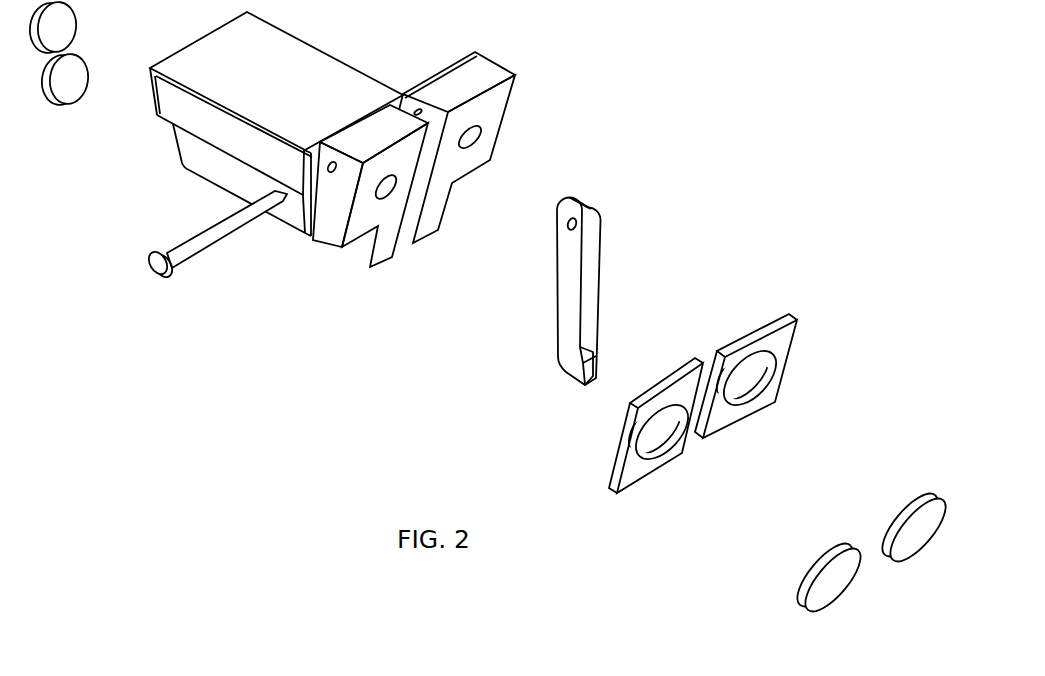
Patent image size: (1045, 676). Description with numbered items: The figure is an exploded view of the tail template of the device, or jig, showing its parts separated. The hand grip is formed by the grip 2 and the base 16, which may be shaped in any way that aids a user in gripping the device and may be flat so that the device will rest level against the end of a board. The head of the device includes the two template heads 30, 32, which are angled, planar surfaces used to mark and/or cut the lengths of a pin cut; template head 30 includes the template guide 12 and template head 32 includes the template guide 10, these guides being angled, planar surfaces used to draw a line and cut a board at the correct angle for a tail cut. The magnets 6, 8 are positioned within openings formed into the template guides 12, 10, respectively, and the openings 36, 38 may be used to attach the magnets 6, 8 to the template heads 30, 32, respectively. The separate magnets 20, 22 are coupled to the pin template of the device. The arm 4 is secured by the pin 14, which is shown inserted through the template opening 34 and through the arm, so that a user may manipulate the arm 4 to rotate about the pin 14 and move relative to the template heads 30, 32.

The grip 2 is at (276, 124).
The arm 4 is at (579, 291).
The magnet 6 is at (828, 577).
The magnet 8 is at (913, 527).
The template guide 10 is at (799, 360).
The template guide 12 is at (605, 451).
The pin 14 is at (159, 281).
The base 16 is at (239, 178).
The magnet 20 is at (53, 27).
The magnet 22 is at (65, 80).
The template head 30 is at (347, 200).
The template head 32 is at (474, 147).
The template opening 34 is at (324, 185).
The opening 36 is at (378, 191).
The opening 38 is at (488, 134).